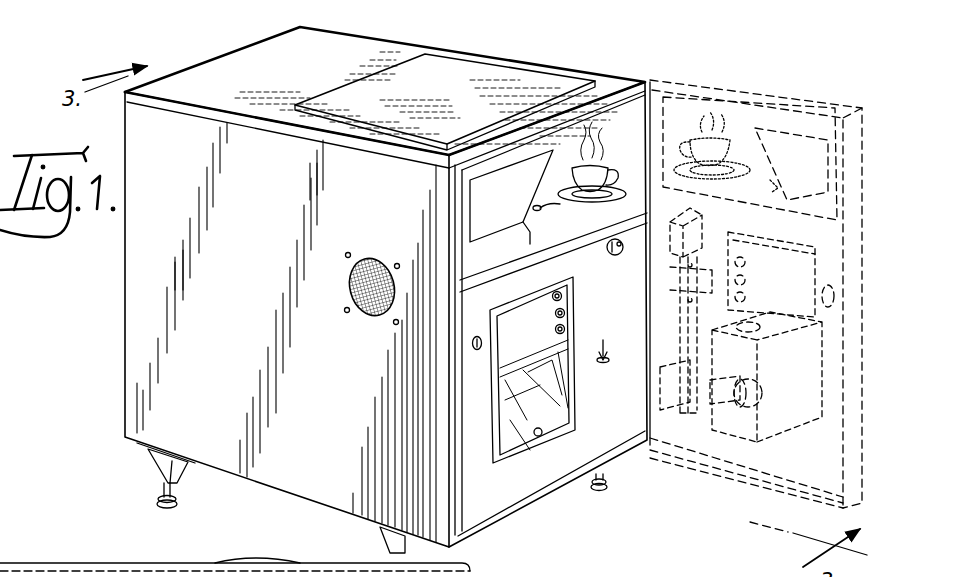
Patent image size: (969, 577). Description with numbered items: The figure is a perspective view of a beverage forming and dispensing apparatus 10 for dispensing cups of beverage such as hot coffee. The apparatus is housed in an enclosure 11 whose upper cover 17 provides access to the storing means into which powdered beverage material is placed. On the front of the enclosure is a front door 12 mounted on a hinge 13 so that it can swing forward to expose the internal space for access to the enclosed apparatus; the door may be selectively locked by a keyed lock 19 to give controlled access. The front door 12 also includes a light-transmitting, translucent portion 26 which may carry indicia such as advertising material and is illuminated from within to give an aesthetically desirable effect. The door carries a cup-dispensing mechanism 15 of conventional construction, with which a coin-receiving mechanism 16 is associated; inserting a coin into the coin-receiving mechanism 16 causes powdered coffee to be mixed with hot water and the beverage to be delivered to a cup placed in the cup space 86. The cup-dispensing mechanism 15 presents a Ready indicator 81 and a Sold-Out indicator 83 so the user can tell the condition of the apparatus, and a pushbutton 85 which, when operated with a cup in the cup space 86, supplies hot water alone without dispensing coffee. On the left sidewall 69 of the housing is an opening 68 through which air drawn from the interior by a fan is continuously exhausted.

The beverage forming and dispensing apparatus 10 is at (590, 62).
The enclosure 11 is at (145, 396).
The front door 12 is at (510, 492).
The hinge 13 is at (648, 82).
The cup-dispensing mechanism 15 is at (575, 388).
The coin-receiving mechanism 16 is at (622, 256).
The upper cover 17 is at (486, 73).
The keyed lock 19 is at (477, 351).
The light-transmitting portion 26 is at (775, 140).
The opening 68 is at (372, 258).
The left sidewall 69 is at (128, 285).
The Ready indicator 81 is at (562, 296).
The Sold-Out indicator 83 is at (565, 313).
The pushbutton 85 is at (565, 329).
The cup space 86 is at (562, 395).